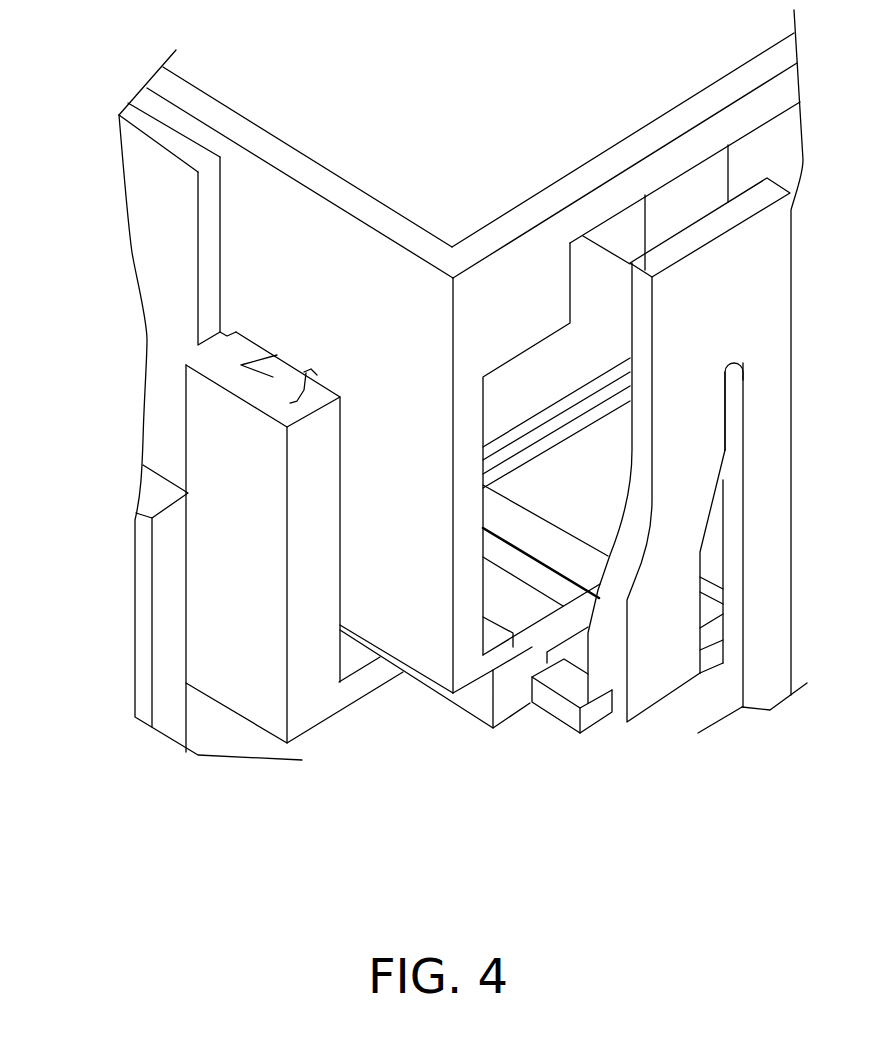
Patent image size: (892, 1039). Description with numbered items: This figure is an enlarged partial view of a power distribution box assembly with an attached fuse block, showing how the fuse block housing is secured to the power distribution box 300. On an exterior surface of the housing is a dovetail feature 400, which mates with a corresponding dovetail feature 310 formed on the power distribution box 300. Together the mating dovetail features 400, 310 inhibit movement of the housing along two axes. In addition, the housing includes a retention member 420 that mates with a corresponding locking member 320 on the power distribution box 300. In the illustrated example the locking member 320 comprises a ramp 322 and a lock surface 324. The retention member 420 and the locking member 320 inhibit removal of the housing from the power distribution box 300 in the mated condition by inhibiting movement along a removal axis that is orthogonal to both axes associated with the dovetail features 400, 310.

The power distribution box 300 is at (258, 700).
The dovetail feature 310 is at (316, 394).
The locking member 320 is at (682, 499).
The ramp 322 is at (612, 548).
The lock surface 324 is at (603, 660).
The dovetail feature 400 is at (258, 362).
The retention member 420 is at (573, 684).